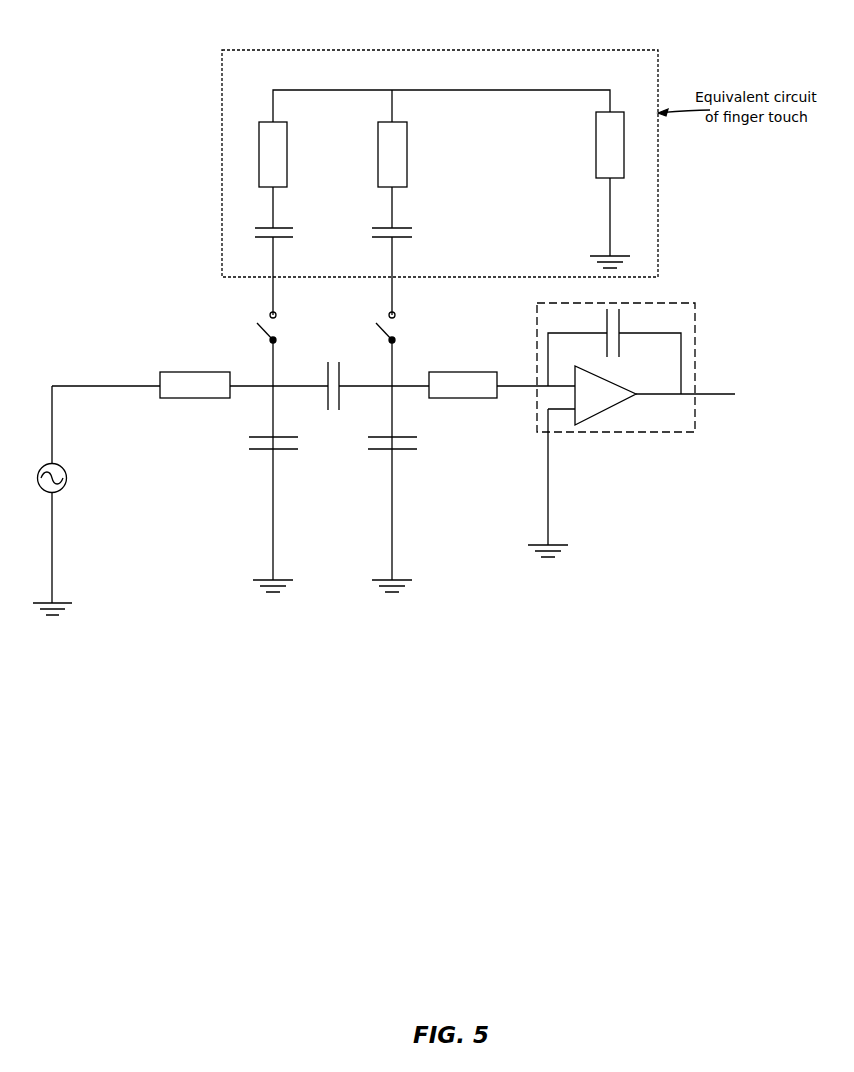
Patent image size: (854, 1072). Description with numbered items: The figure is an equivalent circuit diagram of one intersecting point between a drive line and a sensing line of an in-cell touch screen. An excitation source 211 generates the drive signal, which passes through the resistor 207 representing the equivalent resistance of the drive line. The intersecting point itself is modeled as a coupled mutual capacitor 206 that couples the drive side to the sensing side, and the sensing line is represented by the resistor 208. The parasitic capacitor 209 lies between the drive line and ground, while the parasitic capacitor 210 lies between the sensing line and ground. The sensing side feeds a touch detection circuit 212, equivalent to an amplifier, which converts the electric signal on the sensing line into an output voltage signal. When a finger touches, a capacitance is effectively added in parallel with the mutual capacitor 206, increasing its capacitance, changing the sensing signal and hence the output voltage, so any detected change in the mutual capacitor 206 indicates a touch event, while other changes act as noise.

The mutual capacitor 206 is at (329, 410).
The resistor 207 is at (197, 372).
The resistor 208 is at (465, 372).
The capacitor 209 is at (248, 443).
The capacitor 210 is at (420, 441).
The excitation source 211 is at (68, 485).
The touch detection circuit 212 is at (695, 358).